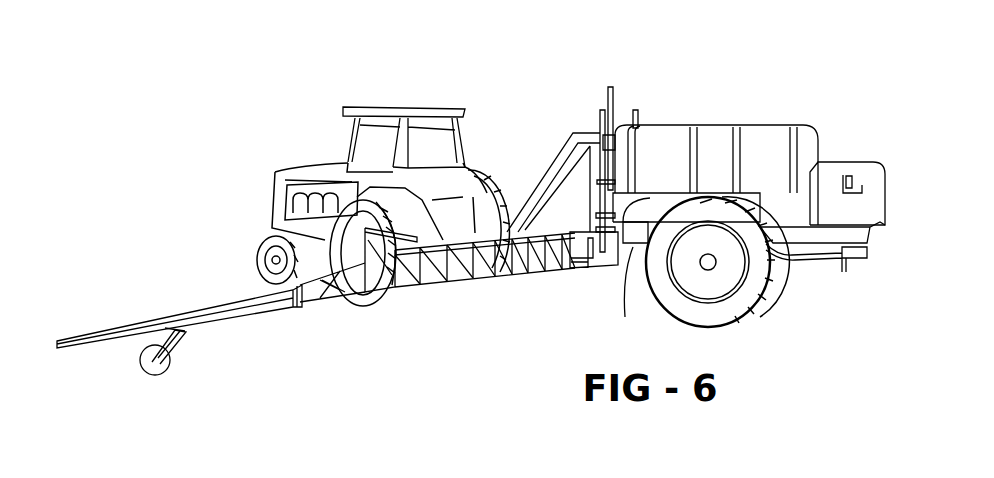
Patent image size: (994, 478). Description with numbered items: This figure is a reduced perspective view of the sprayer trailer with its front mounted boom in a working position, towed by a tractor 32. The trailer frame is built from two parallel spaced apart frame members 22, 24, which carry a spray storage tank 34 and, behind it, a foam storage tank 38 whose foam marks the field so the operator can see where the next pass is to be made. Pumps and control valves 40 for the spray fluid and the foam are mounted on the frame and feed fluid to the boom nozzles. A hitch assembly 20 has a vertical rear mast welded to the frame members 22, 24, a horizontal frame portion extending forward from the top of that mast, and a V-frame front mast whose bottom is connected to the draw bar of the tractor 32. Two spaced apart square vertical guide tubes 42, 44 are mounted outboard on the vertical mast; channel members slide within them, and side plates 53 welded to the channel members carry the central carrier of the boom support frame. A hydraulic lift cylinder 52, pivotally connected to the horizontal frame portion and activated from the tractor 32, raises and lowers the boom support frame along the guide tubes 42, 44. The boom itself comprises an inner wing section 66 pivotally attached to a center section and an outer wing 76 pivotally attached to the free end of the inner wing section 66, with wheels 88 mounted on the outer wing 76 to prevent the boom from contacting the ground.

The hitch assembly 20 is at (552, 140).
The frame member 22 is at (633, 233).
The frame member 24 is at (897, 243).
The tractor 32 is at (410, 107).
The spray storage tank 34 is at (720, 127).
The foam storage tank 38 is at (893, 160).
The pumps and control valves 40 is at (857, 263).
The vertical guide tube 42 is at (600, 115).
The vertical guide tube 44 is at (638, 127).
The hydraulic lift cylinder 52 is at (608, 87).
The plate 53 is at (640, 205).
The inner wing section 66 is at (467, 283).
The outer wing 76 is at (242, 317).
The wheels 88 is at (135, 352).